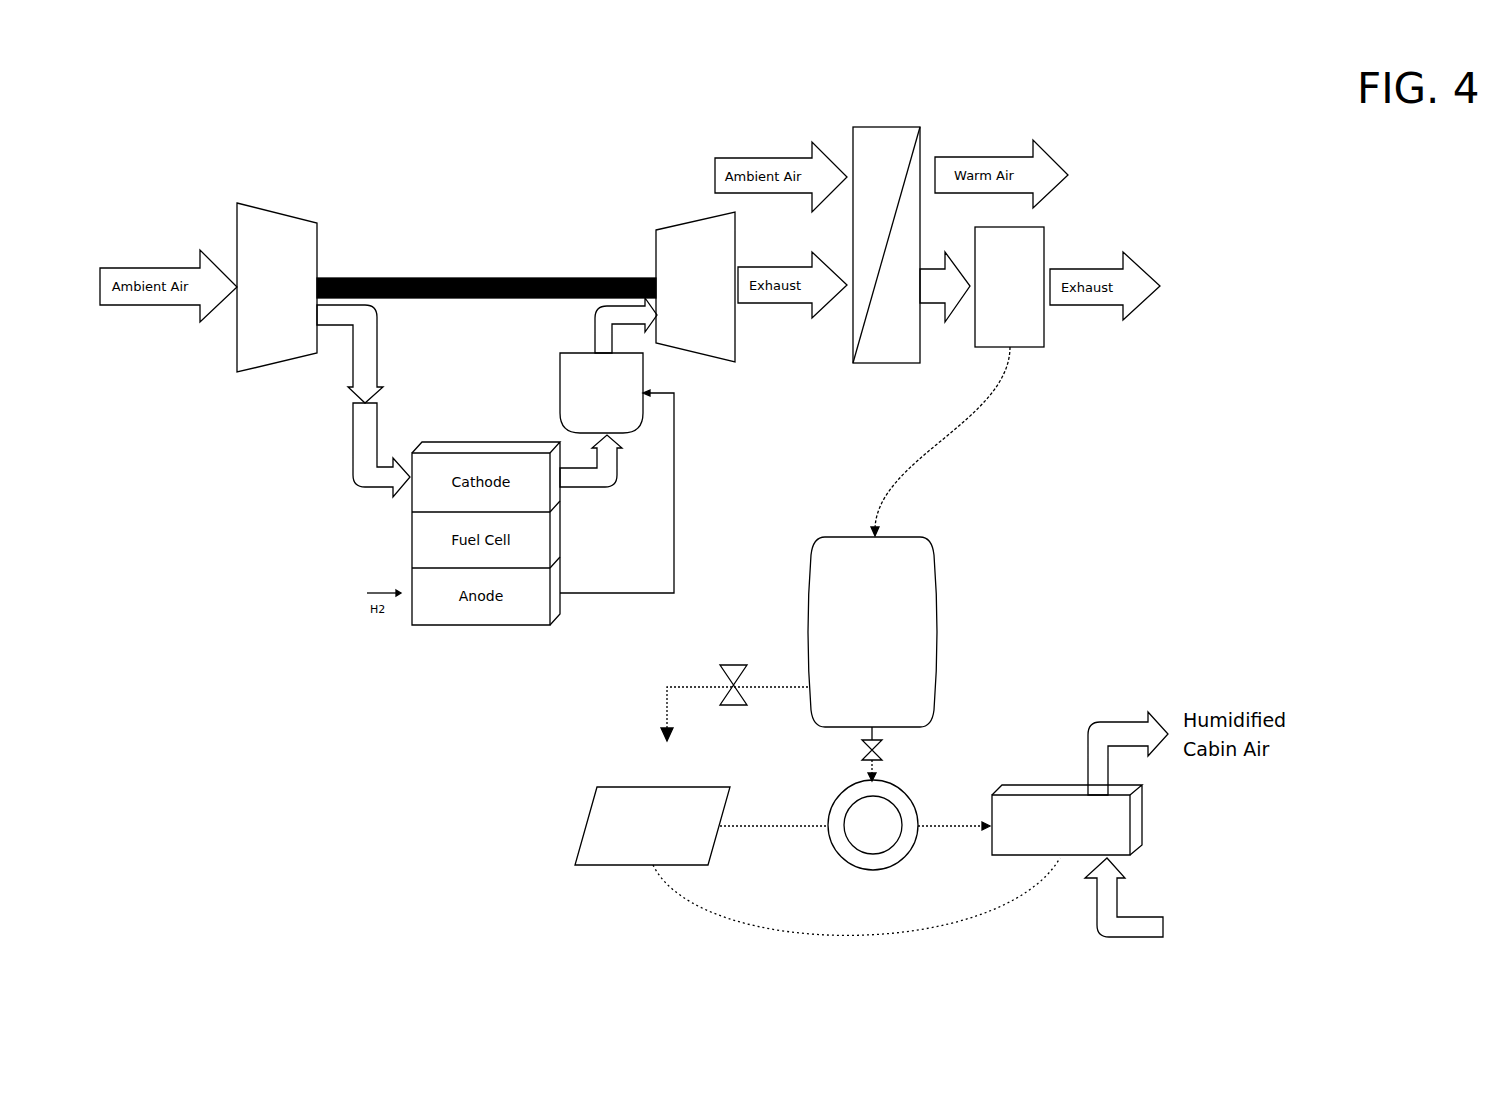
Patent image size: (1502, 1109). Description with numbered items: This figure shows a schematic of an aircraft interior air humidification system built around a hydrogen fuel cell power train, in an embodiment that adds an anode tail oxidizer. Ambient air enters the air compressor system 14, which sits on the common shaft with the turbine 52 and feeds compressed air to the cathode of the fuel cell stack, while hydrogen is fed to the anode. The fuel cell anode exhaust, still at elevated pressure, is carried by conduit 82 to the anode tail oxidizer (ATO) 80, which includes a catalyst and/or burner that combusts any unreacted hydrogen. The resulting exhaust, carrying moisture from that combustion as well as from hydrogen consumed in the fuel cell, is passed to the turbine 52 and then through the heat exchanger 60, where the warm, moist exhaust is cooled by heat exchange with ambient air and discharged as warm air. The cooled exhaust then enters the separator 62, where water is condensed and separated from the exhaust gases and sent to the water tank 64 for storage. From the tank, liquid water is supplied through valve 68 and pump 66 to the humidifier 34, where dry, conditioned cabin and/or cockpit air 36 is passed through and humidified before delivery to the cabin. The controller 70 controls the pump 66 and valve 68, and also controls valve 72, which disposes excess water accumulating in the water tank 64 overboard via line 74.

The air compressor system 14 is at (268, 210).
The turbine 52 is at (672, 228).
The heat exchanger 60 is at (862, 125).
The separator 62 is at (1047, 255).
The anode tail oxidizer (ATO) 80 is at (643, 381).
The conduit 82 is at (683, 546).
The water tank 64 is at (938, 623).
The valve 72 is at (740, 665).
The line 74 is at (706, 714).
The valve 68 is at (880, 752).
The pump 66 is at (912, 800).
The controller 70 is at (577, 825).
The humidifier 34 is at (1143, 823).
The cabin and/or cockpit air 36 is at (1143, 921).